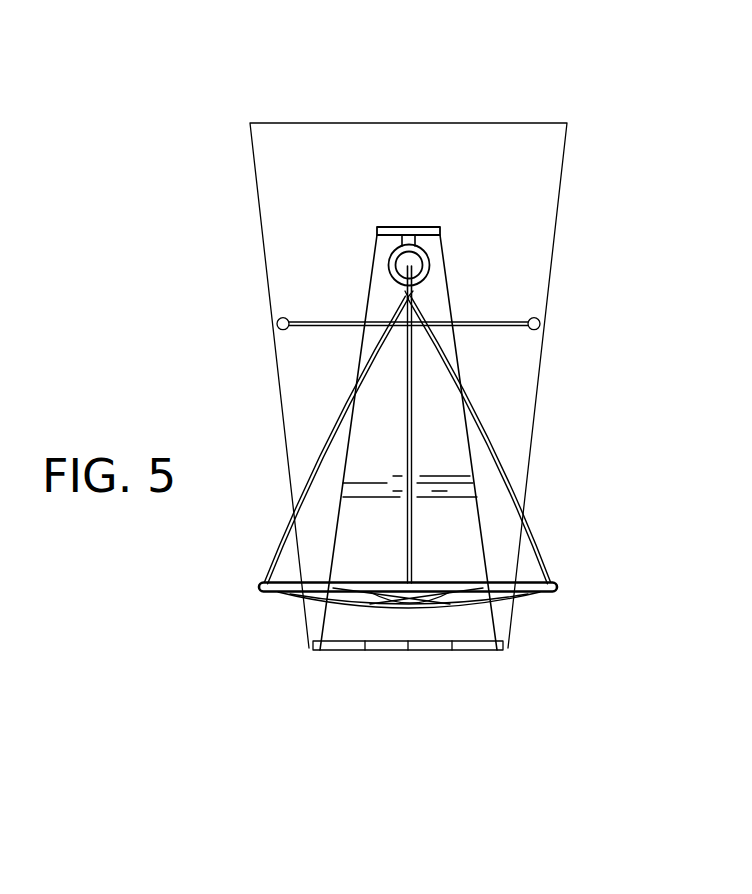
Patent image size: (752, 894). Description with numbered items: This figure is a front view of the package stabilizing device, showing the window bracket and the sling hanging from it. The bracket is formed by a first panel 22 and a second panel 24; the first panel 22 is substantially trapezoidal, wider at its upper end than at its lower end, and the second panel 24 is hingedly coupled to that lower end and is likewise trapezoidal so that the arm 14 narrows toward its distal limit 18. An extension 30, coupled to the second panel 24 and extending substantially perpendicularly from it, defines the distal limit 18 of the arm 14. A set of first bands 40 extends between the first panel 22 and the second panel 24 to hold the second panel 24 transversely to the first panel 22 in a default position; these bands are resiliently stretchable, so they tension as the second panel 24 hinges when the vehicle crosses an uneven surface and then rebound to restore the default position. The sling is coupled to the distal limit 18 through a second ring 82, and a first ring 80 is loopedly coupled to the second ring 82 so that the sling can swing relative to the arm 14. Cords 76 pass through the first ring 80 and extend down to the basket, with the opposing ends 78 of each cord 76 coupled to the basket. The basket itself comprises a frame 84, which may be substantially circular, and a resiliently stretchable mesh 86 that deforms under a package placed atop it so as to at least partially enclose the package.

The first panel 22 is at (290, 188).
The arm 14 is at (444, 290).
The extension 30 is at (392, 227).
The distal limit 18 is at (432, 227).
The second ring 82 is at (430, 262).
The first ring 80 is at (407, 291).
The first bands 40 is at (335, 323).
The cords 76 is at (410, 411).
The second panel 24 is at (380, 415).
The opposing ends 78 is at (270, 583).
The frame 84 is at (335, 587).
The mesh 86 is at (462, 598).